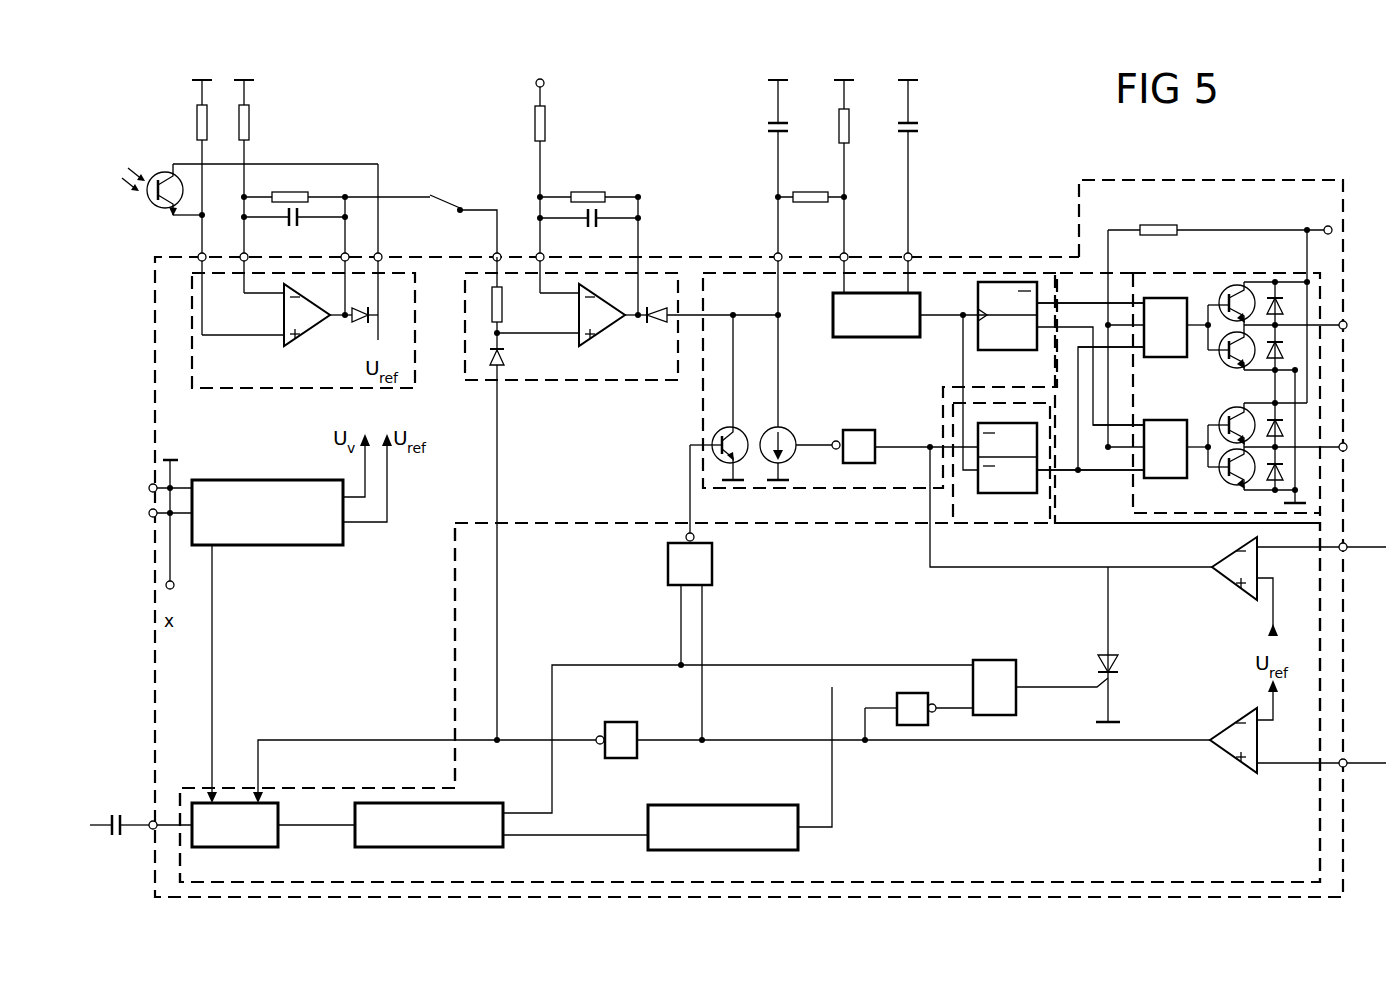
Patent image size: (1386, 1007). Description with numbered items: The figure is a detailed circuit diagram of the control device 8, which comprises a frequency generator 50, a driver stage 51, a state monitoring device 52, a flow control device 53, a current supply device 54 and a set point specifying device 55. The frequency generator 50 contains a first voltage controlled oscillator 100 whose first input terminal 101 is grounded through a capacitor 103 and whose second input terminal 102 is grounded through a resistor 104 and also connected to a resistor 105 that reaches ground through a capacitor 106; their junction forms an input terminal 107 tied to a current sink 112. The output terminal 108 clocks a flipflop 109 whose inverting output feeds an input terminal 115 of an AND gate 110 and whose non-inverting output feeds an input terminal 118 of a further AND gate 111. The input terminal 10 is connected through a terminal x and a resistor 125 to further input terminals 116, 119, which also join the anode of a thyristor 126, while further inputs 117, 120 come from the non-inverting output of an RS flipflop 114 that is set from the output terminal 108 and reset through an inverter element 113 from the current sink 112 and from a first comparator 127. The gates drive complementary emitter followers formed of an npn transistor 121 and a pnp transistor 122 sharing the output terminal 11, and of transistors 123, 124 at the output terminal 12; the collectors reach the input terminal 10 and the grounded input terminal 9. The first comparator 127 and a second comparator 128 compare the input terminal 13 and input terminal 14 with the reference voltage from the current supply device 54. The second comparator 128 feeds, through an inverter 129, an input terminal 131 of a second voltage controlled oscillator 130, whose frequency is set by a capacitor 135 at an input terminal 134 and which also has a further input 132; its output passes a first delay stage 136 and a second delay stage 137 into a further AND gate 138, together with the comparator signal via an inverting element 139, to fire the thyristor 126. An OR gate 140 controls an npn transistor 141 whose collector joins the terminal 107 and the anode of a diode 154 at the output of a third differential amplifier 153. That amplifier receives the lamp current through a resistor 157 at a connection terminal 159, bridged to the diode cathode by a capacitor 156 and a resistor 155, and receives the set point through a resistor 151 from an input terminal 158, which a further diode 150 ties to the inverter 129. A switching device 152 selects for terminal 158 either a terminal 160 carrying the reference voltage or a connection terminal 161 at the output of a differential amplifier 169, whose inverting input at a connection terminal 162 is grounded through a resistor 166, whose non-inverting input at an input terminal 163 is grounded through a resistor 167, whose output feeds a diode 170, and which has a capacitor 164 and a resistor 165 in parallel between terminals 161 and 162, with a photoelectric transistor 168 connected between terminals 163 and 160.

The control device 8 is at (1235, 180).
The input terminal 9 is at (145, 487).
The input terminal 10 is at (152, 516).
The output terminal 11 is at (1358, 326).
The output terminal 12 is at (1358, 448).
The input terminal 13 is at (1345, 552).
The input terminal 14 is at (1345, 758).
The frequency generator 50 is at (965, 273).
The driver stage 51 is at (1306, 273).
The state monitoring device 52 is at (950, 882).
The flow control device 53 is at (750, 702).
The current supply device 54 is at (293, 480).
The set point specifying device 55 is at (306, 388).
The first voltage controlled oscillator 100 is at (876, 315).
The first input terminal 101 is at (911, 253).
The second input terminal 102 is at (847, 253).
The capacitor 103 is at (930, 186).
The resistor 104 is at (863, 186).
The resistor 105 is at (811, 183).
The capacitor 106 is at (759, 253).
The input terminal 107 is at (774, 253).
The output terminal 108 is at (930, 320).
The flipflop 109 is at (1016, 350).
The AND gate 110 is at (1171, 298).
The further AND gate 111 is at (1159, 478).
The current sink 112 is at (787, 430).
The inverter element 113 is at (858, 430).
The RS flipflop 114 is at (1013, 493).
The input terminal 115 is at (1129, 324).
The input terminal 116 is at (1130, 304).
The further input 117 is at (1136, 348).
The input terminal 118 is at (1148, 420).
The input terminal 119 is at (1132, 452).
The further input 120 is at (1153, 496).
The npn transistor 121 is at (1223, 286).
The pnp transistor 122 is at (1236, 300).
The transistor 123 is at (1239, 412).
The transistor 124 is at (1235, 497).
The resistor 125 is at (1220, 217).
The thyristor 126 is at (1129, 644).
The first comparator 127 is at (1242, 592).
The second comparator 128 is at (1245, 773).
The inverter 129 is at (853, 727).
The second voltage controlled oscillator 130 is at (235, 825).
The input terminal 131 is at (268, 796).
The counter input 132 is at (202, 796).
The input terminal 134 is at (152, 831).
The capacitor 135 is at (126, 813).
The first delay stage 136 is at (429, 825).
The second delay stage 137 is at (723, 827).
The further AND gate 138 is at (1040, 673).
The inverting element 139 is at (933, 720).
The OR gate 140 is at (713, 592).
The npn transistor 141 is at (740, 434).
The further diode 150 is at (518, 544).
The resistor 151 is at (518, 302).
The switching device 152 is at (444, 200).
The third differential amplifier 153 is at (600, 346).
The diode 154 is at (701, 339).
The resistor 155 is at (589, 183).
The capacitor 156 is at (600, 236).
The resistor 157 is at (561, 186).
The input terminal 158 is at (496, 254).
The connection terminal 159 is at (544, 254).
The terminal 160 is at (379, 257).
The connection terminal 161 is at (344, 253).
The connection terminal 162 is at (243, 253).
The input terminal 163 is at (198, 253).
The capacitor 164 is at (298, 226).
The resistor 165 is at (296, 192).
The resistor 166 is at (265, 186).
The resistor 167 is at (182, 207).
The photoelectric transistor 168 is at (150, 203).
The differential amplifier 169 is at (302, 348).
The diode 170 is at (352, 320).